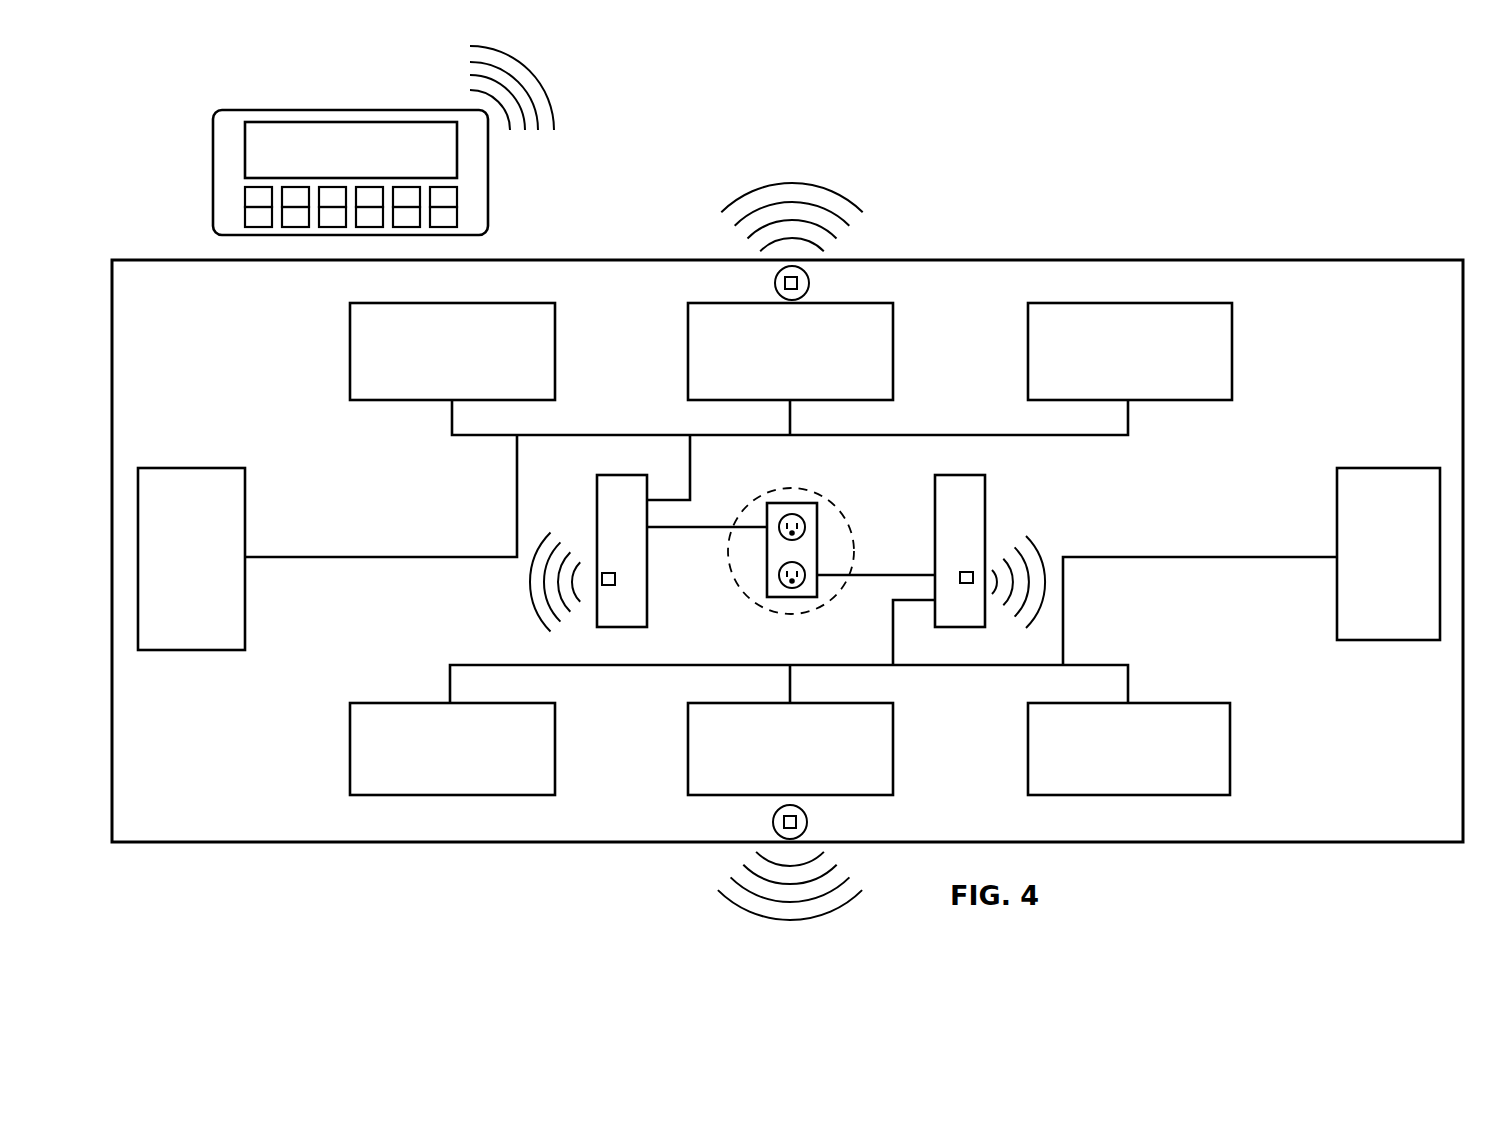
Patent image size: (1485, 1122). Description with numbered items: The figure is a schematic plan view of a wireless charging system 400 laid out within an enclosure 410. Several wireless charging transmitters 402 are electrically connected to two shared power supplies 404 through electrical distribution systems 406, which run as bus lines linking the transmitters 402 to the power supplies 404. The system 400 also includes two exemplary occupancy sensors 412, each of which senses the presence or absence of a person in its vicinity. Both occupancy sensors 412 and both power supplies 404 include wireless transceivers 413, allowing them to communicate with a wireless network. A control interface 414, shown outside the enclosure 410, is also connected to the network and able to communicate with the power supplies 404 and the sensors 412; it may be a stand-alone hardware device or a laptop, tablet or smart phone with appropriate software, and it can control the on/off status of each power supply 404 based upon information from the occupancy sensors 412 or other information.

The wireless charging system 400 is at (1358, 52).
The wireless charging transmitter 402 is at (425, 303).
The shared power supply 404 is at (618, 475).
The electrical distribution system 406 is at (1057, 437).
The building / enclosure 410 is at (1380, 260).
The occupancy sensor 412 is at (776, 282).
The wireless transceiver 413 is at (775, 284).
The control interface 414 is at (265, 110).